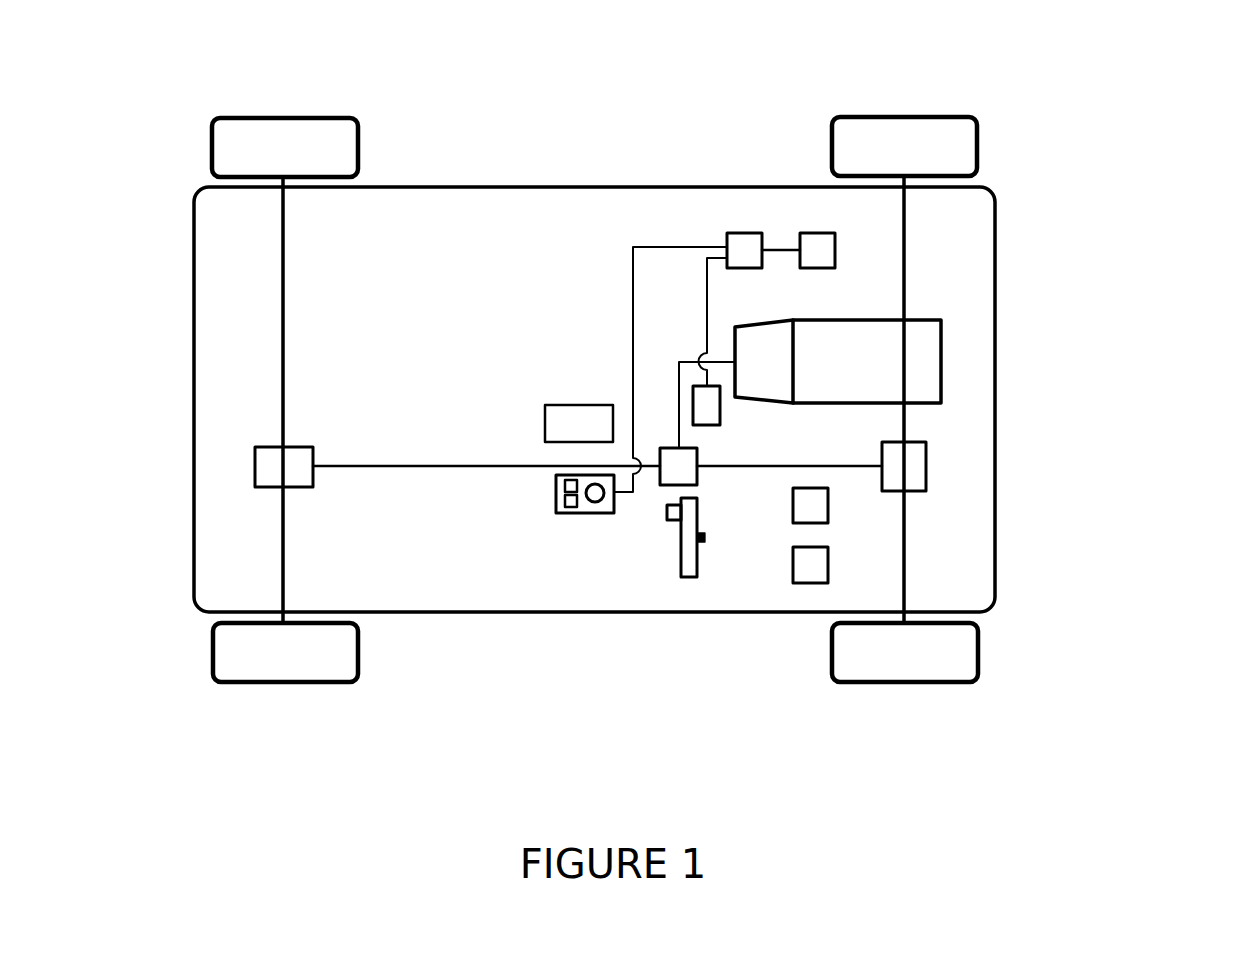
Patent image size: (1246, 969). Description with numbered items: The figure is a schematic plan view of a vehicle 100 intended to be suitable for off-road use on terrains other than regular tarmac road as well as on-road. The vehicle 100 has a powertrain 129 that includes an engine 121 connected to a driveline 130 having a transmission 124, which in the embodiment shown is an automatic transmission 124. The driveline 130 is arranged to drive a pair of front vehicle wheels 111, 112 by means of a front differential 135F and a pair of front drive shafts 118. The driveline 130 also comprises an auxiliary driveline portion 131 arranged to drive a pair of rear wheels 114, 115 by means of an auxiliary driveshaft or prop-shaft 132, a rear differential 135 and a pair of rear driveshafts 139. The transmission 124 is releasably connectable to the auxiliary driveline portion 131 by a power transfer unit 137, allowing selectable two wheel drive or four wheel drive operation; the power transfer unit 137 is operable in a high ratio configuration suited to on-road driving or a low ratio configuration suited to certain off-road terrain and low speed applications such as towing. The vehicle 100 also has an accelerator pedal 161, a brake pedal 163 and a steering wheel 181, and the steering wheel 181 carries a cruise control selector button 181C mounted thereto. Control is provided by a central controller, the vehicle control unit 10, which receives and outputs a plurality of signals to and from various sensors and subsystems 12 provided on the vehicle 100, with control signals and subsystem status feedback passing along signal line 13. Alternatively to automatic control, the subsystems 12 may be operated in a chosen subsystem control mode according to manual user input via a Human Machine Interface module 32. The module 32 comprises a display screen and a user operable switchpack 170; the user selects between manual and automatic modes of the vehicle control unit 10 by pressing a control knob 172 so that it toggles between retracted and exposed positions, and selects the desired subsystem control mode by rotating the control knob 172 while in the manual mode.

The vehicle 100 is at (1095, 142).
The powertrain 129 is at (1095, 393).
The driveline 130 is at (1097, 600).
The auxiliary driveline portion 131 is at (413, 646).
The auxiliary driveshaft or prop-shaft 132 is at (420, 467).
The rear differential 135 is at (263, 467).
The front differential 135F is at (918, 476).
The power transfer unit (PTU) 137 is at (668, 478).
The rear driveshafts 139 is at (283, 297).
The front drive shafts 118 is at (905, 237).
The rear wheel 114 is at (243, 130).
The front vehicle wheel 111 is at (955, 130).
The rear wheel 115 is at (243, 670).
The front vehicle wheel 112 is at (955, 668).
The engine 121 is at (930, 348).
The transmission 124 is at (764, 340).
The vehicle control unit (VCU) 10 is at (735, 233).
The vehicle subsystems 12 is at (817, 233).
The signal line 13 is at (778, 250).
The Human Machine Interface (HMI) module 32 is at (700, 390).
The switchpack 170 is at (572, 513).
The control knob 172 is at (593, 503).
The steering wheel 181 is at (692, 573).
The cruise control selector button 181C is at (675, 520).
The brake pedal 163 is at (802, 508).
The accelerator pedal 161 is at (810, 572).